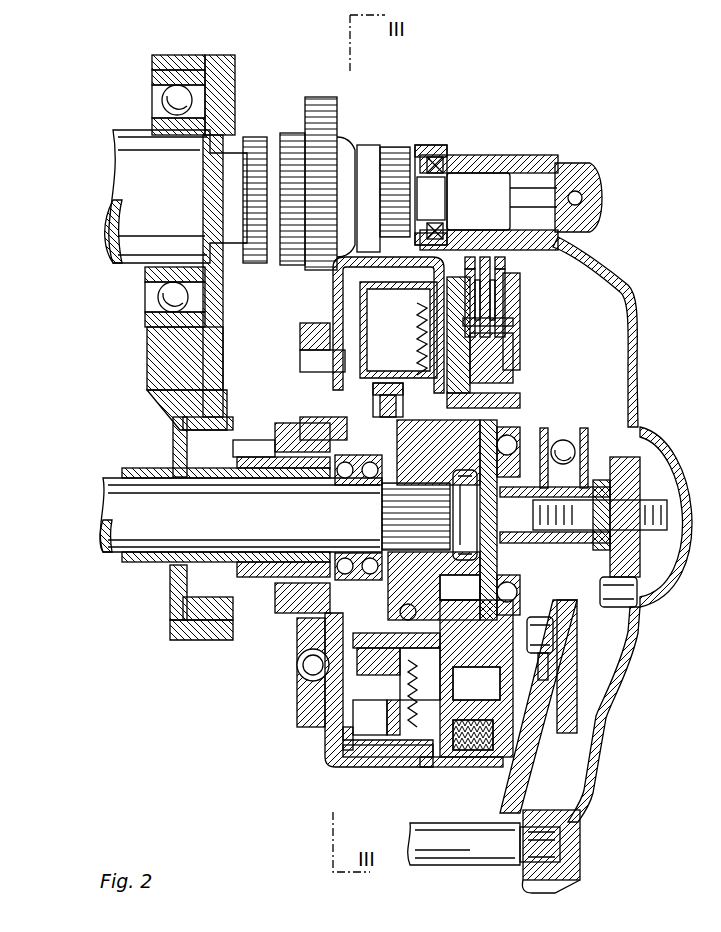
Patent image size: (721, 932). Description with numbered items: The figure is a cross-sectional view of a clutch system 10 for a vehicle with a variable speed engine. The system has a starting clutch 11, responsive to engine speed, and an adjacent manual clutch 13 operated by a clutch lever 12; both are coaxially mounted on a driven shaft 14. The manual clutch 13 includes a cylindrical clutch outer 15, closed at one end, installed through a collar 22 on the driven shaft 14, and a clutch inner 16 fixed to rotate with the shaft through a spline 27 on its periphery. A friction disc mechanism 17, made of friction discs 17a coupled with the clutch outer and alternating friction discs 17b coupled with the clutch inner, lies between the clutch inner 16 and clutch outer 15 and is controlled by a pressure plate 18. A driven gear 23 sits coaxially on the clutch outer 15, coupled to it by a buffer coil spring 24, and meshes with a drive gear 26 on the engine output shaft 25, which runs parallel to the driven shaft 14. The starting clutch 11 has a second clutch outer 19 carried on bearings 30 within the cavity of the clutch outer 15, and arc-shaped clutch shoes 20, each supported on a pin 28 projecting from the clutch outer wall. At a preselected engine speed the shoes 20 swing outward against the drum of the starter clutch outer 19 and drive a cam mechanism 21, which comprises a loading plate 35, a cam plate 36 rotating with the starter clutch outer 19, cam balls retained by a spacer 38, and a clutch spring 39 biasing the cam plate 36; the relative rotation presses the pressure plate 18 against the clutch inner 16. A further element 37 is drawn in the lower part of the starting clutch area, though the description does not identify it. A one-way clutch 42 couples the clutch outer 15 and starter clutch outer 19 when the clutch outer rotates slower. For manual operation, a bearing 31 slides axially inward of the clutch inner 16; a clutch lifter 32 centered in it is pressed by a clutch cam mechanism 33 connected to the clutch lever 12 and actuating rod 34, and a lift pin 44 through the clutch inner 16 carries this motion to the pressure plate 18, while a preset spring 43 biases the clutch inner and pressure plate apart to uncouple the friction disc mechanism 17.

The clutch system 10 is at (152, 612).
The starting clutch 11 is at (437, 767).
The clutch lever 12 is at (538, 770).
The manual clutch 13 is at (525, 266).
The driven shaft 14 is at (103, 500).
The clutch outer 15 is at (333, 762).
The clutch inner 16 is at (516, 420).
The friction disc mechanism 17 is at (566, 290).
The friction discs 17a is at (498, 256).
The friction discs 17b is at (508, 320).
The pressure plate 18 is at (495, 474).
The second clutch outer 19 is at (395, 757).
The clutch shoes 20 is at (372, 318).
The cam mechanism 21 is at (297, 600).
The collar 22 is at (258, 480).
The driven gear 23 is at (297, 730).
The buffer coil spring 24 is at (297, 665).
The output shaft 25 is at (123, 153).
The drive gear 26 is at (338, 100).
The spline 27 is at (385, 513).
The pin 28 is at (373, 677).
The bearings 30 is at (367, 547).
The bearing 31 is at (520, 430).
The clutch lifter 32 is at (567, 607).
The clutch cam mechanism 33 is at (548, 668).
The actuating rod 34 is at (465, 832).
The loading plate 35 is at (452, 367).
The cam plate 36 is at (390, 407).
The spring chamber 37 is at (413, 620).
The spacer 38 is at (415, 433).
The clutch spring 39 is at (385, 410).
The one-way clutch 42 is at (300, 430).
The preset spring 43 is at (498, 670).
The lift pin 44 is at (463, 607).